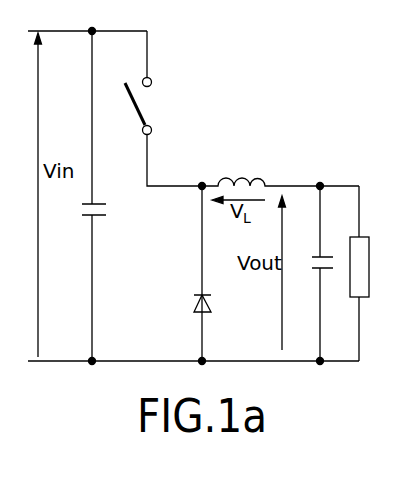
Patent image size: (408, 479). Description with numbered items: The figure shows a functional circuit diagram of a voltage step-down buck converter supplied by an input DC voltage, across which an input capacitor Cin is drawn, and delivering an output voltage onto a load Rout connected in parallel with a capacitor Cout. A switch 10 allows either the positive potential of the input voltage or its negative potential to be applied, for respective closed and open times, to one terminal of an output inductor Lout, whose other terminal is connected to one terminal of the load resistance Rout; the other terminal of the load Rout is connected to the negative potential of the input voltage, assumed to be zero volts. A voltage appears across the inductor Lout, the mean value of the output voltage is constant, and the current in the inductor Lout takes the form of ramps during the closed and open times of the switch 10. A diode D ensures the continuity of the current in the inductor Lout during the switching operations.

The switch 10 is at (145, 103).
The input capacitor Cin is at (83, 217).
The output inductor Lout is at (247, 179).
The diode D is at (212, 303).
The capacitor Cout is at (328, 256).
The load Rout is at (350, 282).